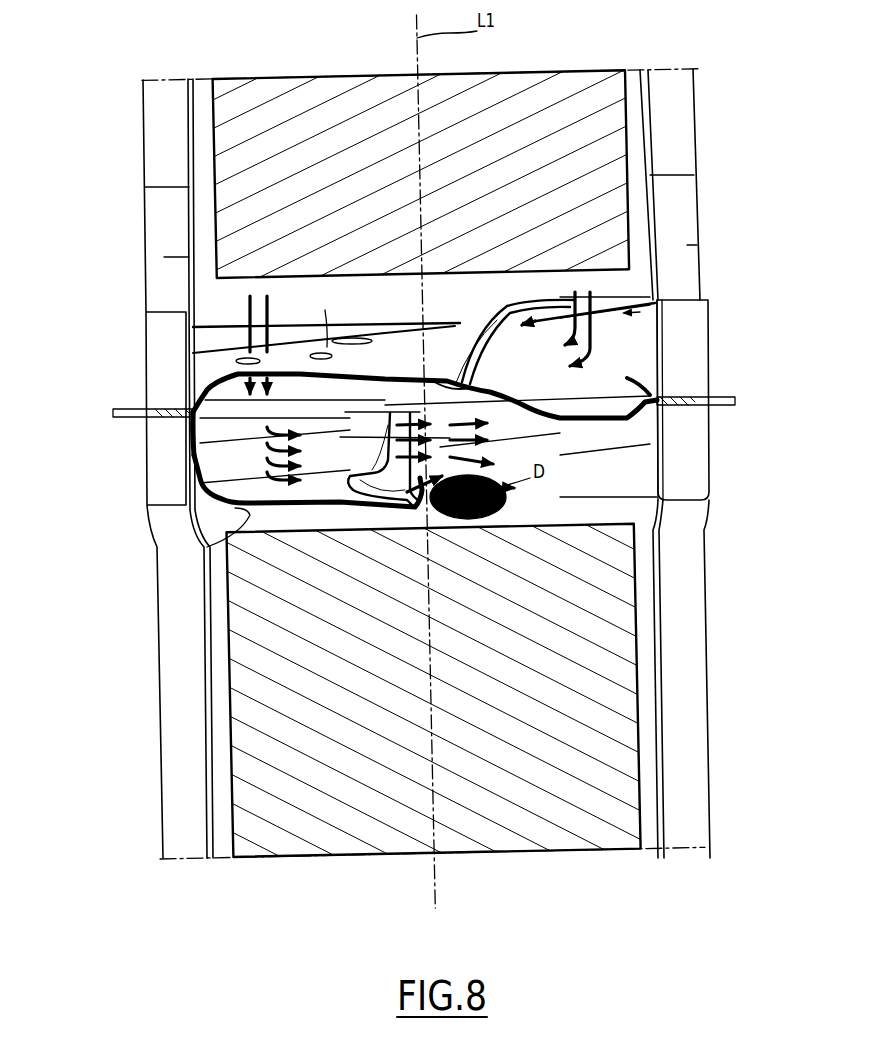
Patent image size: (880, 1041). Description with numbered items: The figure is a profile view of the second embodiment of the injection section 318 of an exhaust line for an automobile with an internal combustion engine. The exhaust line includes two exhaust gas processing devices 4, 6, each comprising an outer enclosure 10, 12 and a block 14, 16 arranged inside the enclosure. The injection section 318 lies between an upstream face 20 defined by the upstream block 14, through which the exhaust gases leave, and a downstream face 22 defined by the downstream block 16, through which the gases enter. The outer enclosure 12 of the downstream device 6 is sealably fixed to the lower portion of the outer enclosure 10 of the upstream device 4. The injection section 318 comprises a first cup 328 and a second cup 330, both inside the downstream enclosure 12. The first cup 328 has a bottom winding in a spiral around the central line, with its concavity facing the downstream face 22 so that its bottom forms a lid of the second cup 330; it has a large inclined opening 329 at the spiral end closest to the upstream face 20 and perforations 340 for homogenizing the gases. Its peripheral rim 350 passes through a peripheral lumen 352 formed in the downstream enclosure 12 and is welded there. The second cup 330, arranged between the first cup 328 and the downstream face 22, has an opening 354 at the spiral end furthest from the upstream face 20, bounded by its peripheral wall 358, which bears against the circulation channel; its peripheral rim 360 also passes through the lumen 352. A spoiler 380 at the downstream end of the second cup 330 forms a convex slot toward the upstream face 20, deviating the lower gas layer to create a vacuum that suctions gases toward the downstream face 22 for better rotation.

The upstream exhaust gas processing device 4 is at (762, 92).
The downstream exhaust gas processing device 6 is at (752, 553).
The outer enclosure 10 is at (648, 190).
The outer enclosure 12 is at (655, 598).
The block 14 is at (627, 145).
The block 16 is at (638, 652).
The upstream face 20 is at (320, 276).
The downstream face 22 is at (578, 528).
The injection section 318 is at (727, 371).
The first cup 328 is at (222, 367).
The opening 329 is at (497, 315).
The second cup 330 is at (207, 547).
The perforations 340 is at (272, 345).
The peripheral rim 350 is at (177, 405).
The peripheral lumen 352 is at (187, 413).
The opening 354 is at (466, 380).
The peripheral wall 358 is at (188, 457).
The peripheral rim 360 is at (177, 412).
The spoiler 380 is at (422, 510).